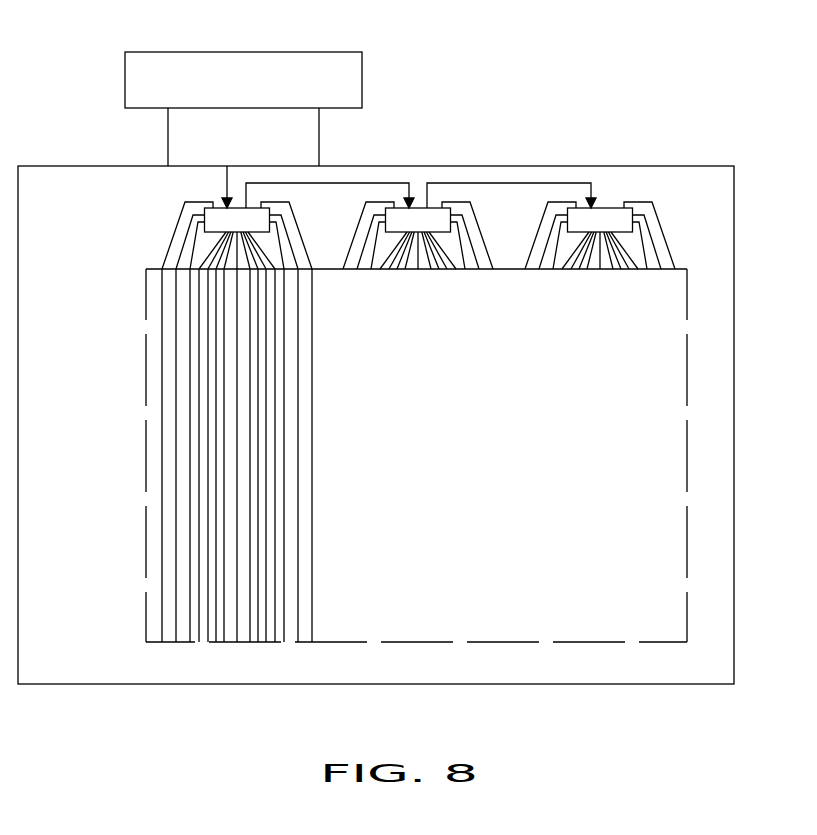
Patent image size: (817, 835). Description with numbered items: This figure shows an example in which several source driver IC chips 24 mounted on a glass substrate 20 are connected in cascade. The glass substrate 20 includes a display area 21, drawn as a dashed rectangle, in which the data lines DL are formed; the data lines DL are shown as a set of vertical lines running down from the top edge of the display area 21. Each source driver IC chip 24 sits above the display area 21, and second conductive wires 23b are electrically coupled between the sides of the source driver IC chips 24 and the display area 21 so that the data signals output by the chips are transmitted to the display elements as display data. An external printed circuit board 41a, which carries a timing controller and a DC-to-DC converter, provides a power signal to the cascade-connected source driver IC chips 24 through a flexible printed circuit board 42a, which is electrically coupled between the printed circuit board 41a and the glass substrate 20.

The glass substrate 20 is at (98, 453).
The display area 21 is at (688, 458).
The source driver IC chips 24 is at (200, 219).
The second conductive wires 23b is at (167, 248).
The printed circuit board 41a is at (362, 78).
The flexible printed circuit board 42a is at (319, 136).
The data line DL is at (258, 455).